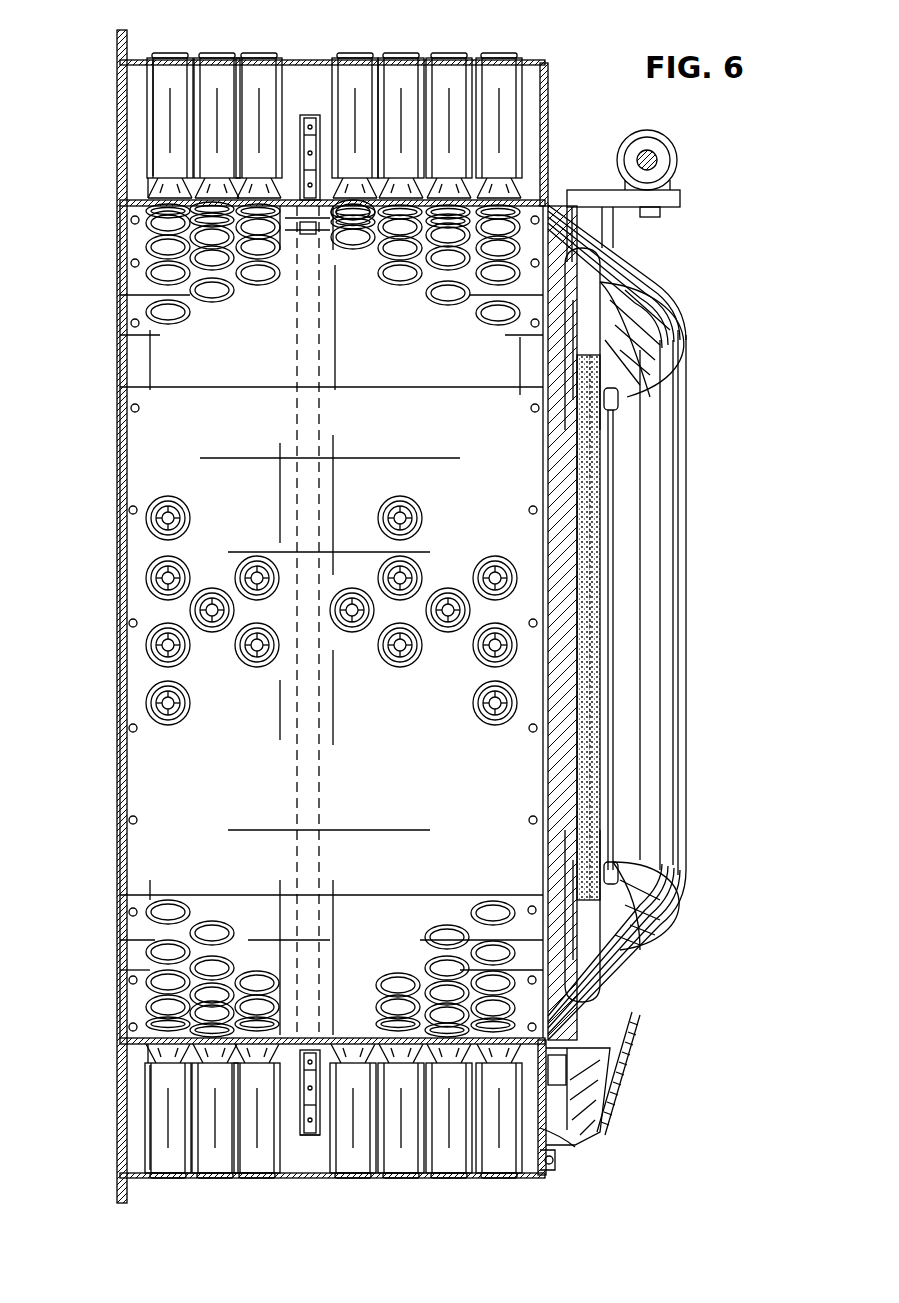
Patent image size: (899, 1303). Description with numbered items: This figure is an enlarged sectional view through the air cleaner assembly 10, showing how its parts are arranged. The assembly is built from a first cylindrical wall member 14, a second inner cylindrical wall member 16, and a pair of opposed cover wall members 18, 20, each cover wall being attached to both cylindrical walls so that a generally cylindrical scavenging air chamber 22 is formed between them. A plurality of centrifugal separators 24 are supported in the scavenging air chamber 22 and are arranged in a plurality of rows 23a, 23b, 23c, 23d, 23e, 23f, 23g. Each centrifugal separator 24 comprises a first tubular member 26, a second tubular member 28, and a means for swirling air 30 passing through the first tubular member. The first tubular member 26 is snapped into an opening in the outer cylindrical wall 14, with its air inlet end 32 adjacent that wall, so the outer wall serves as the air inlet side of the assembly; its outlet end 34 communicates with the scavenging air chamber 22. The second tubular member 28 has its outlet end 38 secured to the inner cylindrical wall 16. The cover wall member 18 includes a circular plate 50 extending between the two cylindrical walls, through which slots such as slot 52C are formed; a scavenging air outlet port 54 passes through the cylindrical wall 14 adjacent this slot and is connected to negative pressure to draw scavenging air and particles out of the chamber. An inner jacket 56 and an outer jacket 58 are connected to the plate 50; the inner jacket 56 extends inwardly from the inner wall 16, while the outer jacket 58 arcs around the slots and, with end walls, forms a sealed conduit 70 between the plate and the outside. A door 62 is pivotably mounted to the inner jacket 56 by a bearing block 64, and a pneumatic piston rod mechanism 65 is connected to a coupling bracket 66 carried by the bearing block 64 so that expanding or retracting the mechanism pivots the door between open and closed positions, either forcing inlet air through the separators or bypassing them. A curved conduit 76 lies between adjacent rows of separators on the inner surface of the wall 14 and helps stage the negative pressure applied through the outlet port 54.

The air cleaner assembly 10 is at (745, 200).
The first cylindrical wall member 14 is at (213, 55).
The second inner cylindrical wall member 16 is at (150, 213).
The cover wall member 18 is at (693, 681).
The cover wall member 20 is at (118, 150).
The scavenging air chamber 22 is at (306, 78).
The row of separators 23a is at (168, 328).
The row of separators 23b is at (212, 304).
The row of separators 23c is at (258, 287).
The row of separators 23d is at (356, 224).
The row of separators 23e is at (400, 287).
The row of separators 23f is at (448, 307).
The row of separators 23g is at (498, 327).
The centrifugal separator 24 is at (140, 95).
The first tubular member 26 is at (155, 110).
The second tubular member 28 is at (150, 190).
The means for swirling air 30 is at (170, 528).
The air inlet end 32 is at (472, 60).
The outlet end 34 is at (355, 206).
The outlet end 38 is at (150, 265).
The circular plate 50 is at (505, 130).
The slot 52C is at (545, 1128).
The scavenging air outlet port 54 is at (348, 1178).
The inner jacket 56 is at (690, 432).
The outer jacket 58 is at (620, 1068).
The door 62 is at (590, 612).
The bearing block 64 is at (595, 292).
The pneumatic piston rod mechanism 65 is at (680, 158).
The coupling bracket 66 is at (662, 203).
The sealed chamber or conduit 70 is at (590, 1092).
The conduit 76 is at (316, 115).